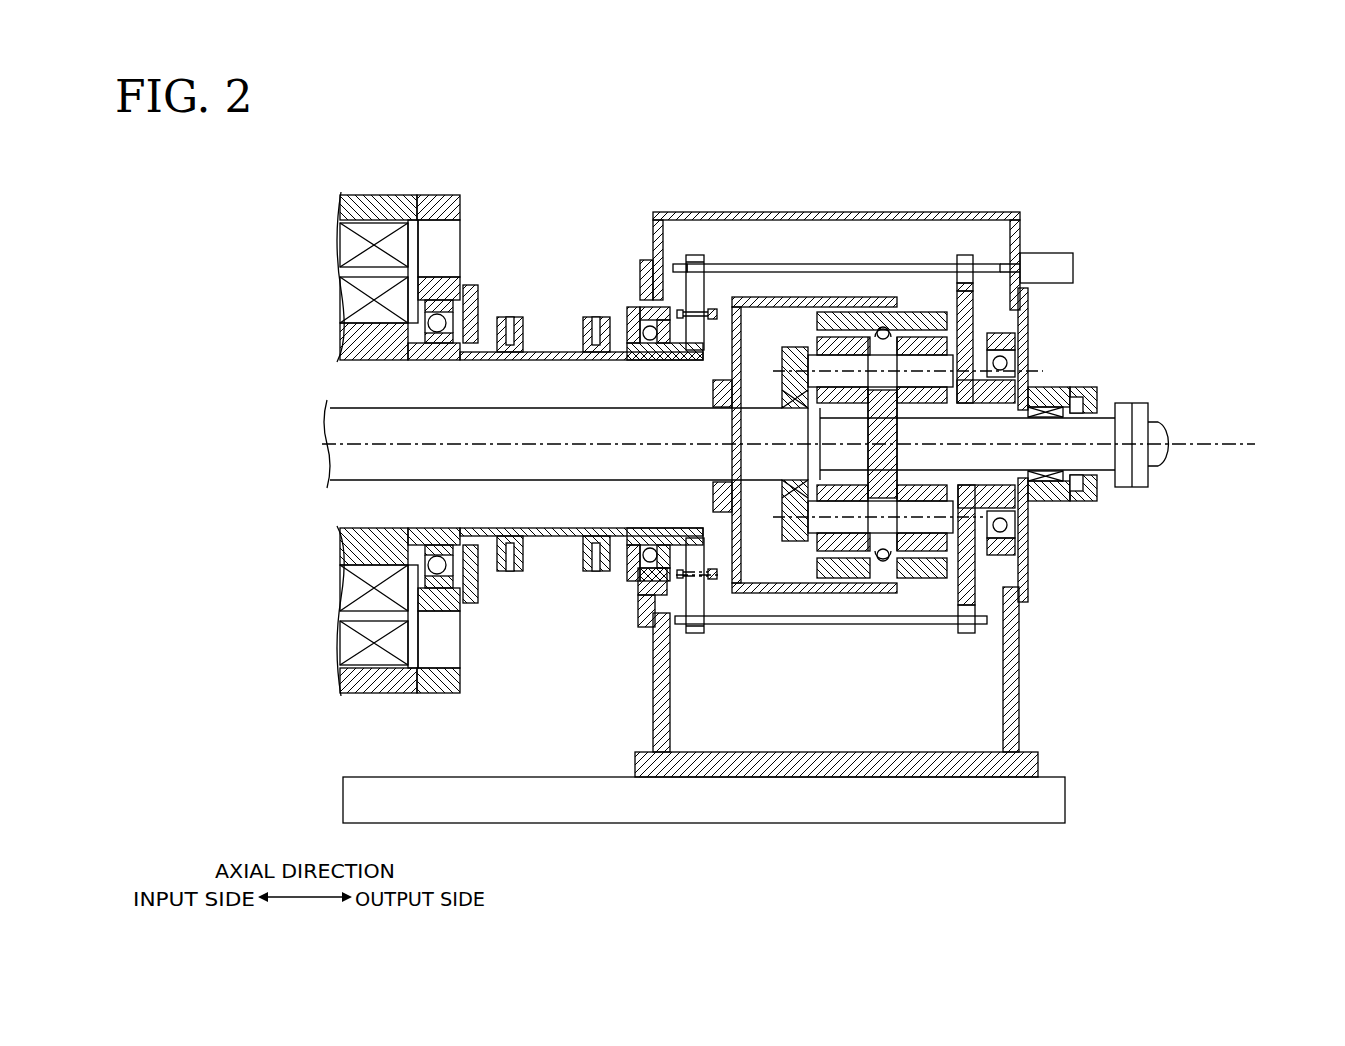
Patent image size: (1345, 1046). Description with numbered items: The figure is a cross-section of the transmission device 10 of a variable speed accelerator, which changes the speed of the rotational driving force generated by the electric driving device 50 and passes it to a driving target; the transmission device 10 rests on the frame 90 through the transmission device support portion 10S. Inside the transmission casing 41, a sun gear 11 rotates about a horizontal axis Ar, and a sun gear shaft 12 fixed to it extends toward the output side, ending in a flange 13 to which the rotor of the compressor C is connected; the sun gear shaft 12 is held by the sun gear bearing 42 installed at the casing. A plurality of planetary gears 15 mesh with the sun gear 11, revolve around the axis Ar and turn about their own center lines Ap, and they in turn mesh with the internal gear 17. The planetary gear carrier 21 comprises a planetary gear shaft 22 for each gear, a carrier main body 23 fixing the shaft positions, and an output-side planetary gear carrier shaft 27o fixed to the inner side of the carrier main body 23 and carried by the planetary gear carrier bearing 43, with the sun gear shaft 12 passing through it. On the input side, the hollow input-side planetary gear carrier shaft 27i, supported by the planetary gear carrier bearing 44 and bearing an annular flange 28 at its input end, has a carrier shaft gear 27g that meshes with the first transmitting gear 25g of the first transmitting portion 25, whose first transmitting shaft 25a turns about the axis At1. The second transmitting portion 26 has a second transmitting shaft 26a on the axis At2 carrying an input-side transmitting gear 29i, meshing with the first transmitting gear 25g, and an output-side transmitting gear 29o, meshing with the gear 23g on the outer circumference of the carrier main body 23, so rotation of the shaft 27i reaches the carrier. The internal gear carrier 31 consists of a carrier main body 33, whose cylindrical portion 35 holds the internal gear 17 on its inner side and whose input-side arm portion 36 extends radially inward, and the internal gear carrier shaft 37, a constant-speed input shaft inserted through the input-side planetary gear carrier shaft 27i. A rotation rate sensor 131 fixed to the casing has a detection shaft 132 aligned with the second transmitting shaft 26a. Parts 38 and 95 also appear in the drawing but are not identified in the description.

The transmission device 10 is at (1025, 210).
The transmission device support portion 10S is at (1012, 708).
The sun gear 11 is at (1040, 505).
The sun gear shaft 12 is at (1103, 462).
The flange 13 is at (1123, 483).
The planetary gear 15 is at (795, 318).
The internal gear 17 is at (914, 325).
The planetary gear carrier 21 is at (977, 303).
The planetary gear shaft 22 is at (848, 350).
The carrier main body 23 is at (1022, 282).
The gear 23g is at (970, 287).
The first transmitting portion 25 is at (713, 256).
The first transmitting shaft 25a is at (712, 316).
The first transmitting gear 25g is at (700, 260).
The second transmitting portion 26 is at (870, 260).
The second transmitting shaft 26a is at (800, 297).
The carrier shaft gear 27g is at (700, 357).
The input-side planetary gear carrier shaft 27i is at (634, 305).
The output-side planetary gear carrier shaft 27o is at (1010, 356).
The annular flange 28 is at (628, 318).
The input-side transmitting gear 29i is at (668, 258).
The output-side transmitting gear 29o is at (966, 255).
The internal gear carrier 31 is at (727, 547).
The carrier main body 33 is at (805, 863).
The cylindrical portion 35 is at (793, 594).
The input-side arm portion 36 is at (722, 577).
The internal gear carrier shaft 37 is at (673, 482).
The input shaft 38 is at (618, 498).
The transmission casing 41 is at (649, 214).
The sun gear bearing 42 is at (1057, 485).
The planetary gear carrier bearing 43 is at (1010, 362).
The planetary gear carrier bearing 44 is at (645, 285).
The electric driving device 50 is at (390, 192).
The frame 90 is at (1065, 805).
The tube 95 is at (553, 350).
The rotation rate sensor 131 is at (1063, 262).
The detection shaft 132 is at (1003, 266).
The center line Ap is at (978, 330).
The axis At1 is at (676, 313).
The axis At2 is at (893, 264).
The compressor C is at (1150, 405).
The axis Ar is at (1197, 444).